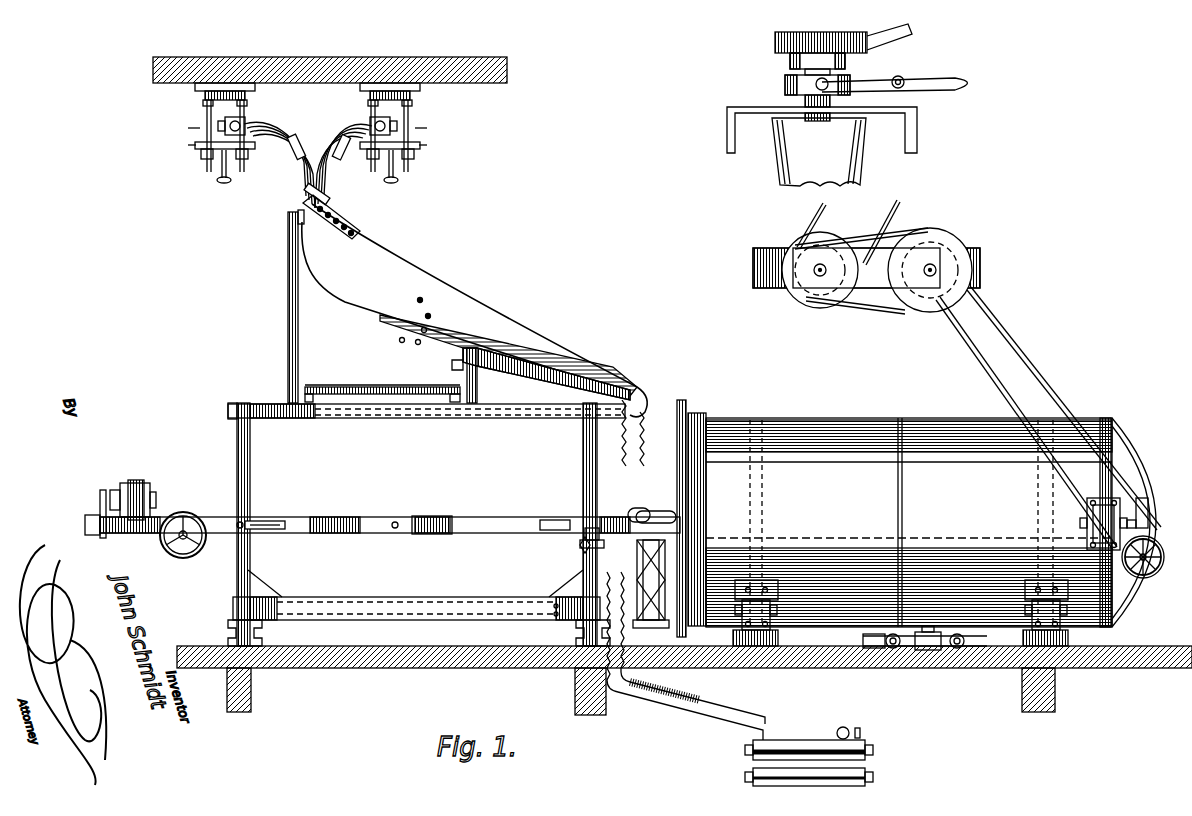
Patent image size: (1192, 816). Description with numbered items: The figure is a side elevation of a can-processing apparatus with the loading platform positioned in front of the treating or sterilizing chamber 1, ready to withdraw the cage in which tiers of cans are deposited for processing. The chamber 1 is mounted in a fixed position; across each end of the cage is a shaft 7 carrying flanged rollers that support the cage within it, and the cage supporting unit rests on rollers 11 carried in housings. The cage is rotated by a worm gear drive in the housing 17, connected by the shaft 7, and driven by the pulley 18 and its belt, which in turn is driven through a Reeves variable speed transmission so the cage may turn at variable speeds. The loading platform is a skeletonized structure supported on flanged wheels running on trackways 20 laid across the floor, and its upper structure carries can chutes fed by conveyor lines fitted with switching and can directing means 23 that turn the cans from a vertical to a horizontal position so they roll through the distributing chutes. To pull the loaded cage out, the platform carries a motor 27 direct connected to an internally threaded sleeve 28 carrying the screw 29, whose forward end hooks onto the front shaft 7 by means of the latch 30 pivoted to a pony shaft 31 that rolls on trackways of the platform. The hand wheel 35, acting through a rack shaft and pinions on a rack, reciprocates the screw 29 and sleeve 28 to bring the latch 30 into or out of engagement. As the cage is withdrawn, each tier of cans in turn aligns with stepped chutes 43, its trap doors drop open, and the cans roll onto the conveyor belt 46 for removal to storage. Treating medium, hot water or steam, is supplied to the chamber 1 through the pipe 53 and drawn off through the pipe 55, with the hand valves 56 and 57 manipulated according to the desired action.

The treating or sterilizing chamber 1 is at (931, 522).
The shaft 7 is at (684, 514).
The rollers 11 is at (764, 508).
The housing 17 is at (1142, 498).
The pulley 18 is at (1160, 557).
The trackways 20 is at (248, 662).
The switching and can directing means 23 is at (344, 138).
The motor 27 is at (148, 490).
The sleeve 28 is at (478, 533).
The screw 29 is at (96, 512).
The latch 30 is at (655, 518).
The pony shaft 31 is at (648, 525).
The hand wheel 35 is at (190, 520).
The chutes 43 is at (612, 637).
The conveyor belt 46 is at (822, 740).
The pipe 53 is at (972, 650).
The pipe 55 is at (872, 650).
The hand valve 56 is at (957, 650).
The hand valve 57 is at (893, 650).